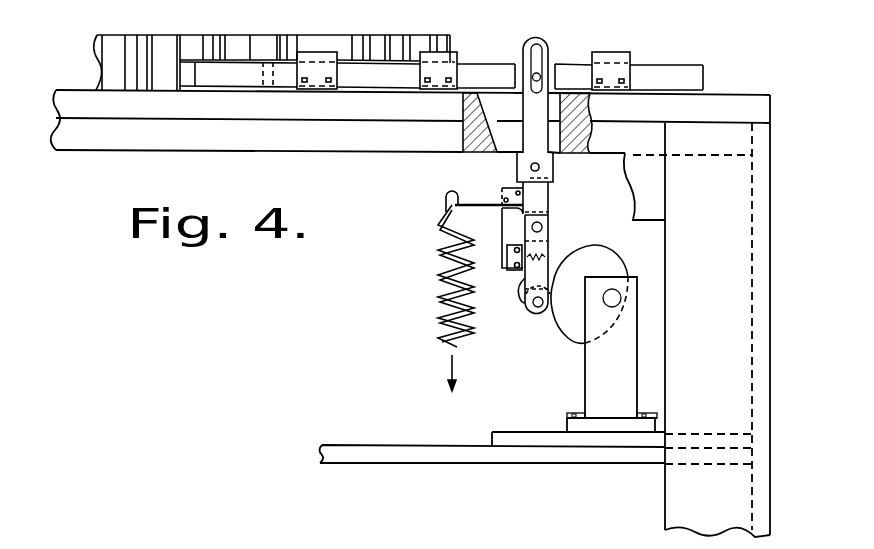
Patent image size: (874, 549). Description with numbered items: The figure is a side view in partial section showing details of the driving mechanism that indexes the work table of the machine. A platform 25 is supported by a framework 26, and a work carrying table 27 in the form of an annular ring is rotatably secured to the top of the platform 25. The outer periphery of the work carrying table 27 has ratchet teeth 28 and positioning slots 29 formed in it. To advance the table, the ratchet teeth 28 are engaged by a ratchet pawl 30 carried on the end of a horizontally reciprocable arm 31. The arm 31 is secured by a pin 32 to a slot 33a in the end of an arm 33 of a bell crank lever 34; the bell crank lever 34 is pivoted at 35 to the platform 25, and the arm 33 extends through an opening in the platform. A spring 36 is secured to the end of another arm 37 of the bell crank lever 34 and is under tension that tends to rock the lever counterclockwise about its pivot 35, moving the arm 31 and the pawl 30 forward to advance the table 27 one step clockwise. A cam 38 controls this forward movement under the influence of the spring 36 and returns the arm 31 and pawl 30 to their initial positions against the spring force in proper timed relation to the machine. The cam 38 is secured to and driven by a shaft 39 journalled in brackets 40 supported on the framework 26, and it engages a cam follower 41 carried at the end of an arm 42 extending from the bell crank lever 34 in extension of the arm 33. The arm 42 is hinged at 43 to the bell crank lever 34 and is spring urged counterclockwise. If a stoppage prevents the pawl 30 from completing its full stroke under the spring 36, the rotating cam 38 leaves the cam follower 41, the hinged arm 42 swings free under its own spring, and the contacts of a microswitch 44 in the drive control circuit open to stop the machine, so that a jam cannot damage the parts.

The platform 25 is at (742, 93).
The framework 26 is at (720, 249).
The work carrying table 27 is at (95, 74).
The ratchet teeth 28 is at (192, 40).
The positioning slots 29 is at (143, 40).
The ratchet pawl 30 is at (235, 73).
The horizontally reciprocable arm 31 is at (486, 44).
The pin 32 is at (538, 76).
The arm 33 is at (532, 105).
The slot 33a is at (530, 52).
The bell crank lever 34 is at (548, 194).
The pivot 35 is at (532, 166).
The spring 36 is at (433, 253).
The arm 37 is at (472, 192).
The cam 38 is at (571, 323).
The shaft 39 is at (613, 297).
The brackets 40 is at (605, 388).
The cam follower 41 is at (537, 314).
The arm 42 is at (550, 243).
The hinge 43 is at (543, 224).
The microswitch 44 is at (507, 219).